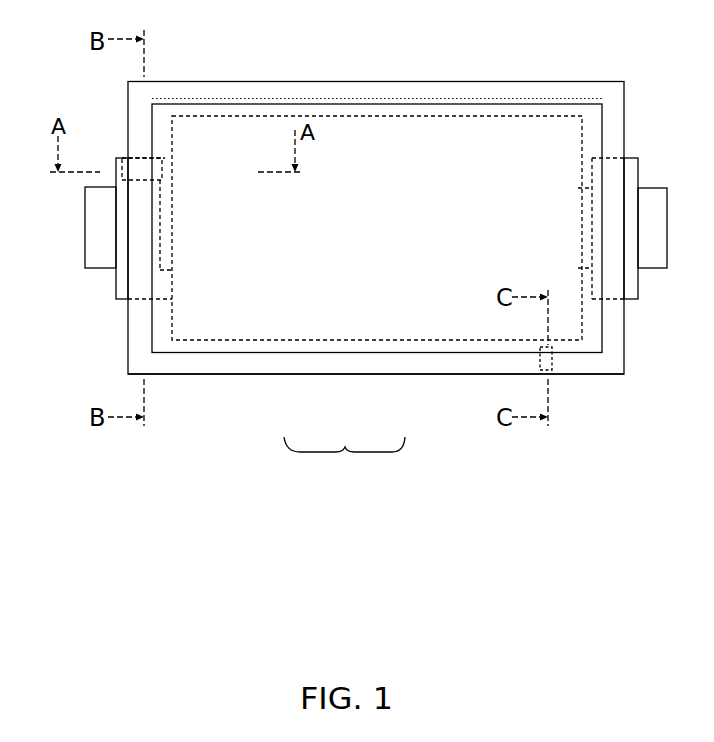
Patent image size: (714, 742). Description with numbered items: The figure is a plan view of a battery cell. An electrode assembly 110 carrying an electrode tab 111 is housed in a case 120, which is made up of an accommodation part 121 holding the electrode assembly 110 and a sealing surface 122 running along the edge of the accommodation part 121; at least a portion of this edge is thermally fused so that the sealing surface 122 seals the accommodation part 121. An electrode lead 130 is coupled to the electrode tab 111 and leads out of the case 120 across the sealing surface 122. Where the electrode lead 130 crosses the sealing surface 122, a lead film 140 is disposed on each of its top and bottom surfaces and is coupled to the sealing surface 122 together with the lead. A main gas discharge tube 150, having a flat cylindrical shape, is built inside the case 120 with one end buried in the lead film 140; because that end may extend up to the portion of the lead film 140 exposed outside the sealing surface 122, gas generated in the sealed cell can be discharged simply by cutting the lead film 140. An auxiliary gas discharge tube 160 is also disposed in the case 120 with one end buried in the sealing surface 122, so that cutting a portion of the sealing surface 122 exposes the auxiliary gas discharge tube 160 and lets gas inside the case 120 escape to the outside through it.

The electrode assembly 110 is at (375, 115).
The electrode tab 111 is at (166, 182).
The case 120 is at (344, 461).
The accommodation part 121 is at (293, 353).
The sealing surface 122 is at (385, 375).
The electrode lead 130 is at (85, 268).
The lead film 140 is at (116, 299).
The main gas discharge tube 150 is at (147, 164).
The auxiliary gas discharge tube 160 is at (566, 366).